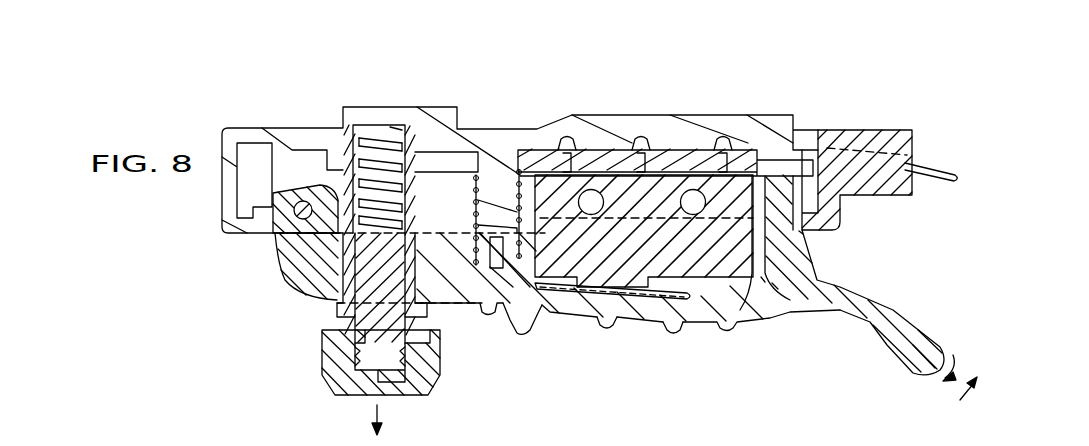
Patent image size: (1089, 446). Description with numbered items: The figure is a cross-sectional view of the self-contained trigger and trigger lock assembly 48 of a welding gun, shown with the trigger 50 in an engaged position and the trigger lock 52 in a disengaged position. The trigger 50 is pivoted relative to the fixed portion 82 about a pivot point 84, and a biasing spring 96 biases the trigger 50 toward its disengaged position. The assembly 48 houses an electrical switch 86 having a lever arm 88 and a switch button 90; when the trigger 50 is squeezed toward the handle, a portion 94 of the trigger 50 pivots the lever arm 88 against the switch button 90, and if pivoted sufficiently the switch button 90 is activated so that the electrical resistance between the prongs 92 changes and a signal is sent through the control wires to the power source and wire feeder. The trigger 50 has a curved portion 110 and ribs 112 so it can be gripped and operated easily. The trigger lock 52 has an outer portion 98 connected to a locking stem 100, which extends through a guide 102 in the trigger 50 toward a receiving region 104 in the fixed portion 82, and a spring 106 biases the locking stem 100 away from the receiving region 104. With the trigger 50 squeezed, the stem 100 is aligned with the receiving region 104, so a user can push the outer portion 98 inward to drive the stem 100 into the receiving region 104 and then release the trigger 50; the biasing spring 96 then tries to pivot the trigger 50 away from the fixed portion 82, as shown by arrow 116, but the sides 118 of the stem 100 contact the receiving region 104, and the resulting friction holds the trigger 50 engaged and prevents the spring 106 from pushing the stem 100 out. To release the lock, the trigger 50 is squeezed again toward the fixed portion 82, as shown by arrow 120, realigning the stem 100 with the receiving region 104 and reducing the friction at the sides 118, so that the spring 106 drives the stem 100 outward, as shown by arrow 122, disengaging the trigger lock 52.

The self-contained trigger and trigger lock assembly 48 is at (874, 93).
The trigger 50 is at (893, 297).
The trigger lock 52 is at (311, 325).
The fixed portion 82 is at (760, 115).
The pivot point 84 is at (300, 200).
The electrical switch 86 is at (750, 237).
The lever arm 88 is at (688, 300).
The switch button 90 is at (630, 297).
The prongs 92 is at (942, 166).
The portion of the trigger 94 is at (660, 322).
The biasing spring 96 is at (540, 133).
The outer portion 98 is at (337, 378).
The locking stem 100 is at (373, 253).
The guide 102 is at (310, 280).
The receiving region 104 is at (457, 130).
The spring 106 is at (375, 138).
The curved portion 110 is at (920, 343).
The ribs 112 is at (522, 342).
The arrow 116 is at (955, 357).
The sides of the stem 118 is at (405, 150).
The arrow 120 is at (962, 398).
The arrow 122 is at (377, 412).